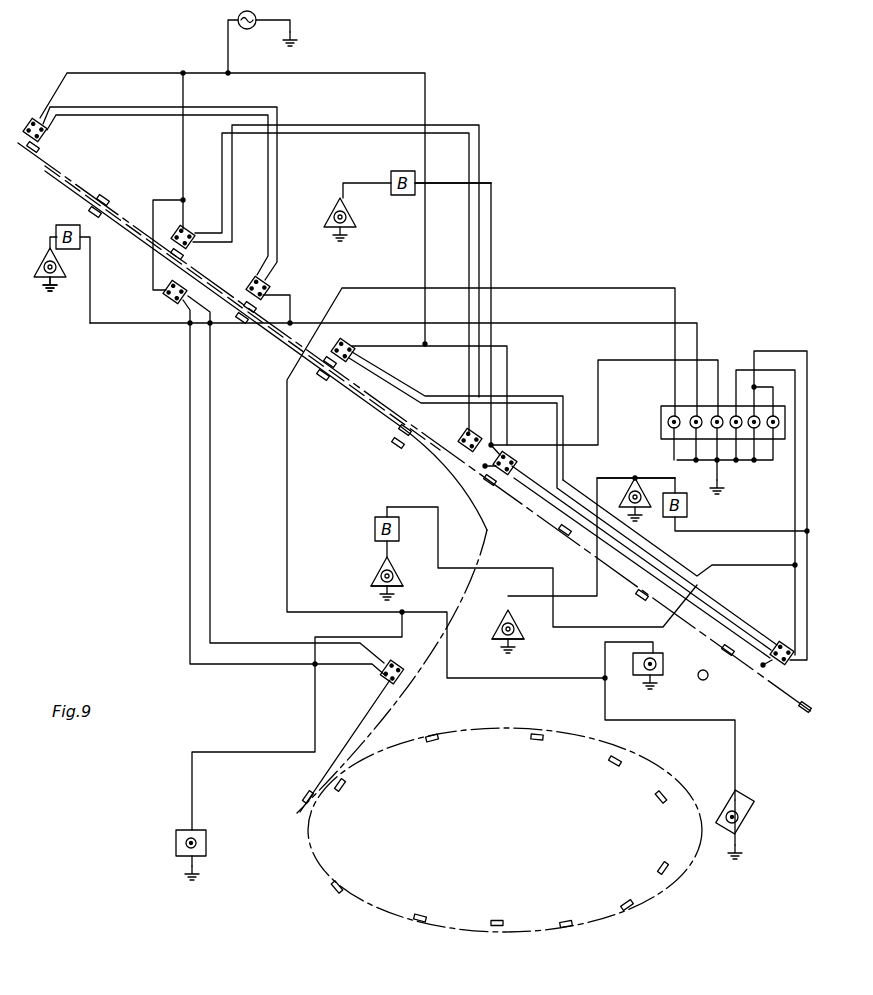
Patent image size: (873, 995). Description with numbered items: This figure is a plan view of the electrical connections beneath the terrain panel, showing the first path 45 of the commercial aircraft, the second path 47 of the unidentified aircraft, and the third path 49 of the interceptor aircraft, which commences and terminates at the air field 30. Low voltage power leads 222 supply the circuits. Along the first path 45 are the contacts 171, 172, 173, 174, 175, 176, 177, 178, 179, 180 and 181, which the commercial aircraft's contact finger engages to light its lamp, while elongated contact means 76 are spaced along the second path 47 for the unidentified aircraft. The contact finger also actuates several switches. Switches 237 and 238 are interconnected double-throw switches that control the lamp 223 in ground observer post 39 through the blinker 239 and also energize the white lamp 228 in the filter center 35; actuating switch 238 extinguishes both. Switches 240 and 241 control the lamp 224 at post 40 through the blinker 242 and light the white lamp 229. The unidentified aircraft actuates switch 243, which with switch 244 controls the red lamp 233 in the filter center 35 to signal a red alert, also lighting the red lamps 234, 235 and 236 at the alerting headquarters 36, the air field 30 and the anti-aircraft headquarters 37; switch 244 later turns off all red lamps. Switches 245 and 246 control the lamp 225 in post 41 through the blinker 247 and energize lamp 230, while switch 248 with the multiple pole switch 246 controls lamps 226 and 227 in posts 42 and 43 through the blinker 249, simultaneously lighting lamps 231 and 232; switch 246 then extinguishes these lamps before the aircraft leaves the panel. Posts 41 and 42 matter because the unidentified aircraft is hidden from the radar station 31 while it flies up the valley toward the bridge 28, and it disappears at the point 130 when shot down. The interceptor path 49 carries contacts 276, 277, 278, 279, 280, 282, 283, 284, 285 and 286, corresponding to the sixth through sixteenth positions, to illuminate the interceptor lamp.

The low voltage power leads 222 is at (256, 28).
The double-throw switch 237 is at (40, 118).
The contact 171 is at (36, 144).
The first path 45 is at (78, 186).
The second path 47 is at (140, 240).
The contact 172 is at (105, 196).
The elongated contact means 76 is at (90, 210).
The lamp 223 is at (42, 268).
The ground observer post 39 is at (48, 288).
The blinker 239 is at (80, 255).
The switch 240 is at (190, 228).
The contact 173 is at (182, 256).
The switch 243 is at (168, 298).
The contact 174 is at (246, 296).
The double-throw switch 238 is at (278, 280).
The lamp 224 is at (336, 218).
The ground observer post 40 is at (356, 214).
The blinker 242 is at (403, 197).
The switch 245 is at (352, 343).
The contact 175 is at (324, 380).
The contact 176 is at (418, 432).
The switch 241 is at (462, 432).
The switch 248 is at (515, 464).
The contact 177 is at (494, 490).
The contact 178 is at (563, 536).
The contact 179 is at (642, 600).
The blinker 247 is at (374, 526).
The lamp 225 is at (392, 566).
The ground observer post 41 is at (371, 576).
The lamp 226 is at (510, 635).
The ground observer post 42 is at (492, 650).
The ground observer post 43 is at (628, 502).
The lamp 227 is at (660, 480).
The blinker 249 is at (688, 505).
The filter center 35 is at (661, 418).
The red lamp 233 is at (666, 434).
The white lamp 228 is at (693, 414).
The white lamp 229 is at (715, 414).
The white lamp 230 is at (735, 414).
The white lamp 231 is at (757, 414).
The white lamp 232 is at (774, 440).
The alerting headquarters 36 is at (664, 665).
The red lamp 234 is at (654, 661).
The radar station 31 is at (706, 680).
The contact 180 is at (732, 656).
The multiple pole switch 246 is at (782, 663).
The contact 181 is at (804, 712).
The air field 30 is at (748, 822).
The red lamp 235 is at (740, 815).
The switch 244 is at (385, 680).
The red lamp 236 is at (197, 840).
The anti-aircraft headquarters 37 is at (176, 848).
The third path 49 is at (493, 728).
The contact 279 is at (436, 744).
The contact 278 is at (537, 743).
The tenth contact 280 is at (346, 785).
The point 130 is at (304, 802).
The bridge 28 is at (340, 884).
The contact 282 is at (426, 903).
The contact 283 is at (495, 920).
The contact 284 is at (562, 921).
The contact 277 is at (616, 766).
The sixth contact 276 is at (663, 801).
The contact 286 is at (662, 865).
The contact 285 is at (628, 900).